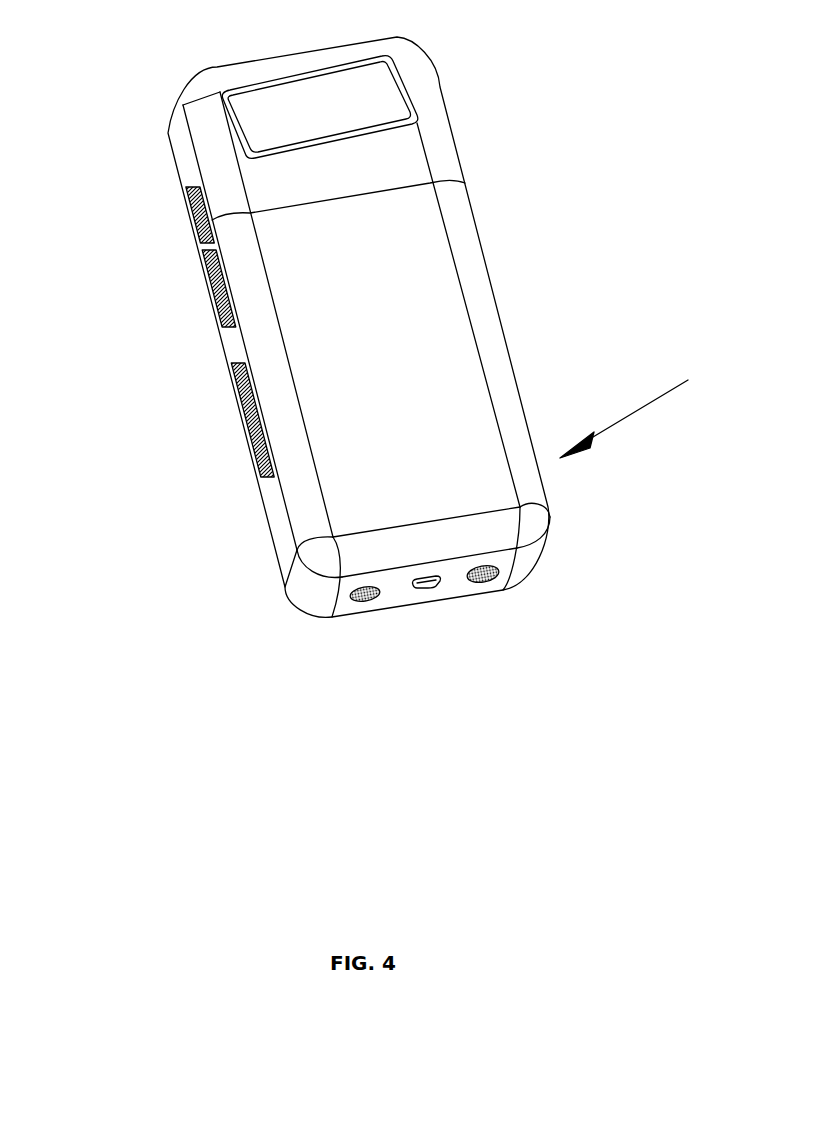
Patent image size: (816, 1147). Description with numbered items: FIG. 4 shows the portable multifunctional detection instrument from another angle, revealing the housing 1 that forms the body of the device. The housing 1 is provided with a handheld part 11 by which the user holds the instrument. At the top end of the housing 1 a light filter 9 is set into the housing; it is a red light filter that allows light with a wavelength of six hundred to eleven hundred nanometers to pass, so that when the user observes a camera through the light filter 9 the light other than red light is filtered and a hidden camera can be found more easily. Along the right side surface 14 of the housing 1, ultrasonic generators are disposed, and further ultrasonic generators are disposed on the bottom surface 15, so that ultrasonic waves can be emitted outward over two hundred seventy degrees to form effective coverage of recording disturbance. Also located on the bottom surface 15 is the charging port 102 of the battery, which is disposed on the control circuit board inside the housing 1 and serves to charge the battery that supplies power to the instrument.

The housing 1 is at (440, 337).
The light filter 9 is at (357, 100).
The handheld part 11 is at (644, 411).
The right side surface 14 is at (233, 347).
The bottom surface 15 is at (340, 602).
The charging port 102 is at (427, 583).